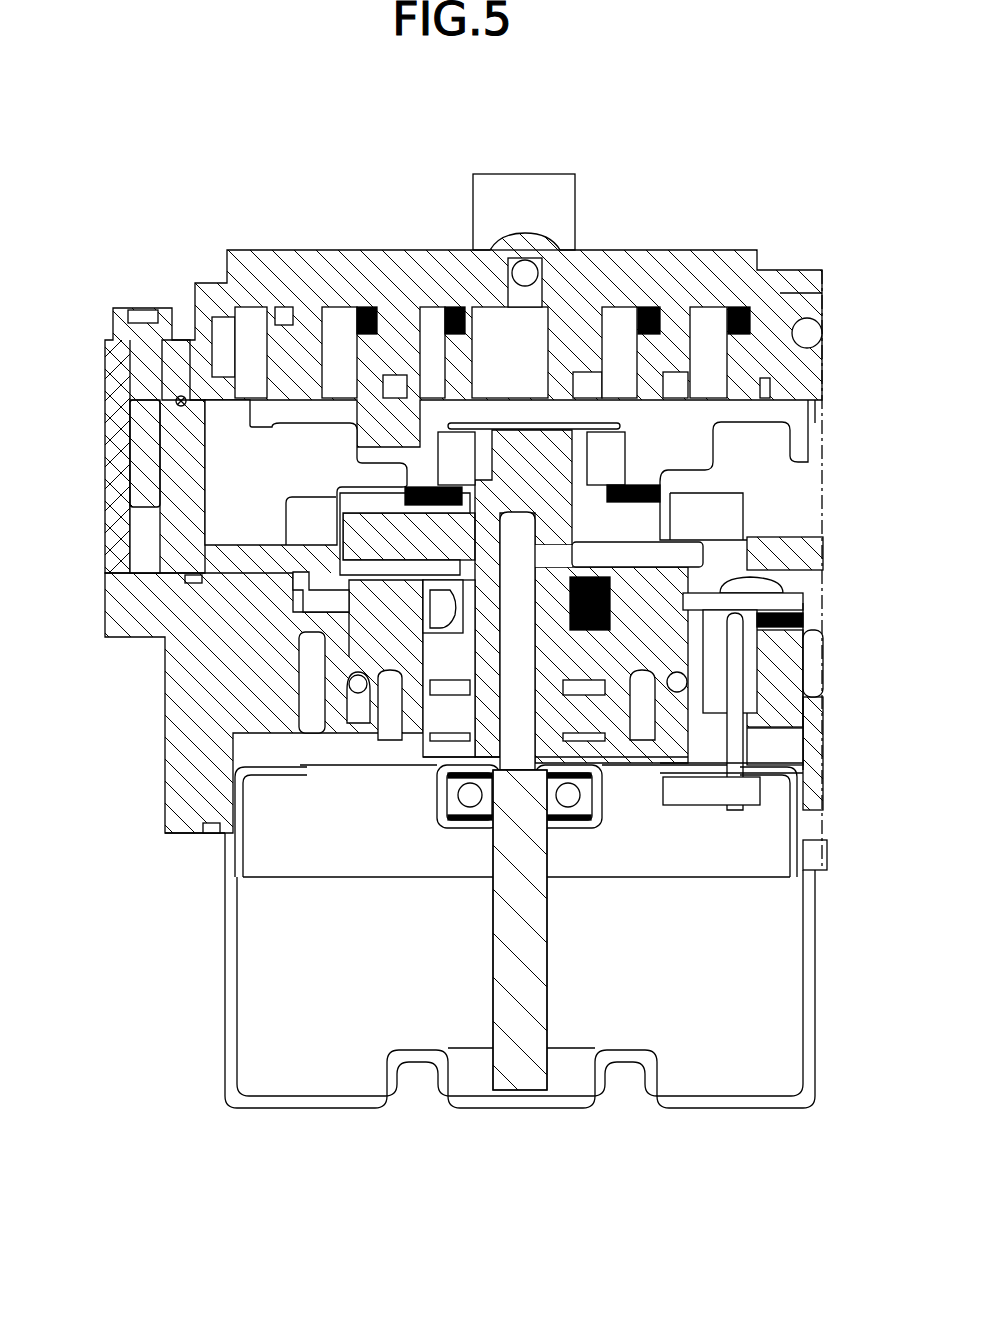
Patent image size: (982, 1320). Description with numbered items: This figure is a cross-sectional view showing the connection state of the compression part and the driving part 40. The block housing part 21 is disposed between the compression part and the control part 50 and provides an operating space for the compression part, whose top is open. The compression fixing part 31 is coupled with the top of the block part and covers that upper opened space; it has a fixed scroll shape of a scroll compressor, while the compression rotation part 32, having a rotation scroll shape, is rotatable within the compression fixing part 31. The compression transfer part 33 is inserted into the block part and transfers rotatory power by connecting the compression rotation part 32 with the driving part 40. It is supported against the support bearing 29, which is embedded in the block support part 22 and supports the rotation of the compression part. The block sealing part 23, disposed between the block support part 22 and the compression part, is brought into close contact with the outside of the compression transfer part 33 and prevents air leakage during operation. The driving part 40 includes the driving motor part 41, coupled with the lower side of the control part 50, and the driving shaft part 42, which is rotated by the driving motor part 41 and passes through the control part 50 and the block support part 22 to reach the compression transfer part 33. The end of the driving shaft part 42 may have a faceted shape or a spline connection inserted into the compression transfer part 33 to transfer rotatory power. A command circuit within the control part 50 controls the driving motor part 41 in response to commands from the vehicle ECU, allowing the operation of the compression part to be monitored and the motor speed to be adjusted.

The block housing part 21 is at (120, 525).
The block support part 22 is at (452, 708).
The block sealing part 23 is at (445, 600).
The support bearing 29 is at (425, 775).
The compression fixing part 31 is at (253, 263).
The compression rotation part 32 is at (272, 403).
The compression transfer part 33 is at (306, 576).
The driving part 40 is at (496, 877).
The driving motor part 41 is at (302, 1114).
The driving shaft part 42 is at (503, 977).
The control part 50 is at (165, 763).